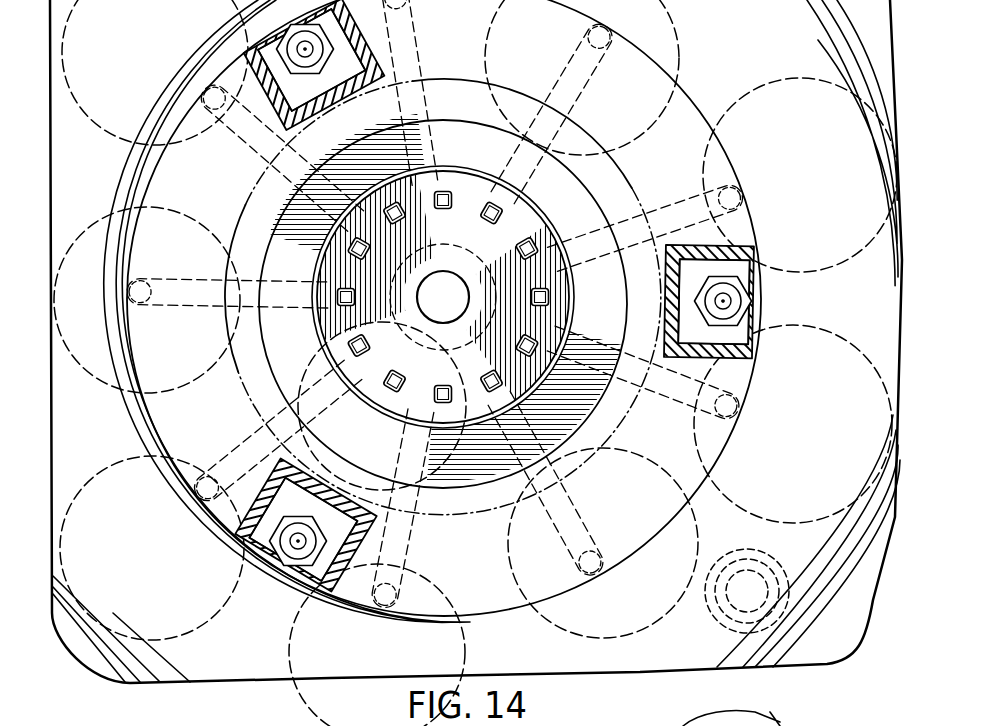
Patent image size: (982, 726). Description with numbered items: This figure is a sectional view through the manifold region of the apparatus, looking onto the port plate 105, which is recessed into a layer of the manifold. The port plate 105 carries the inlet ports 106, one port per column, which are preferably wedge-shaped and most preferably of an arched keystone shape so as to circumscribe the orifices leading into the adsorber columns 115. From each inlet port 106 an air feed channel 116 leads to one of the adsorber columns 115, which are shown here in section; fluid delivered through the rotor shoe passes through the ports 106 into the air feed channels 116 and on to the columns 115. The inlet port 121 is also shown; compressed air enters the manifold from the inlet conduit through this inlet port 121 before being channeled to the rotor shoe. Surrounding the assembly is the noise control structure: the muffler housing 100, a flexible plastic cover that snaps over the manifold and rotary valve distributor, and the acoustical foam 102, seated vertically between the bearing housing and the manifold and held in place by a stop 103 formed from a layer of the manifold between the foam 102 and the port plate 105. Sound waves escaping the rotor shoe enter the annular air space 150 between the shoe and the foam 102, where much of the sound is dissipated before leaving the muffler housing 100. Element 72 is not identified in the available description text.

The dowel pin 72 is at (461, 303).
The muffler housing 100 is at (785, 720).
The acoustical foam 102 is at (175, 147).
The stop 103 is at (419, 297).
The port plate 105 is at (443, 308).
The inlet ports 106 is at (442, 297).
The adsorber columns 115 is at (760, 80).
The air feed channels 116 is at (436, 305).
The inlet port 121 is at (728, 602).
The annular air space 150 is at (494, 296).